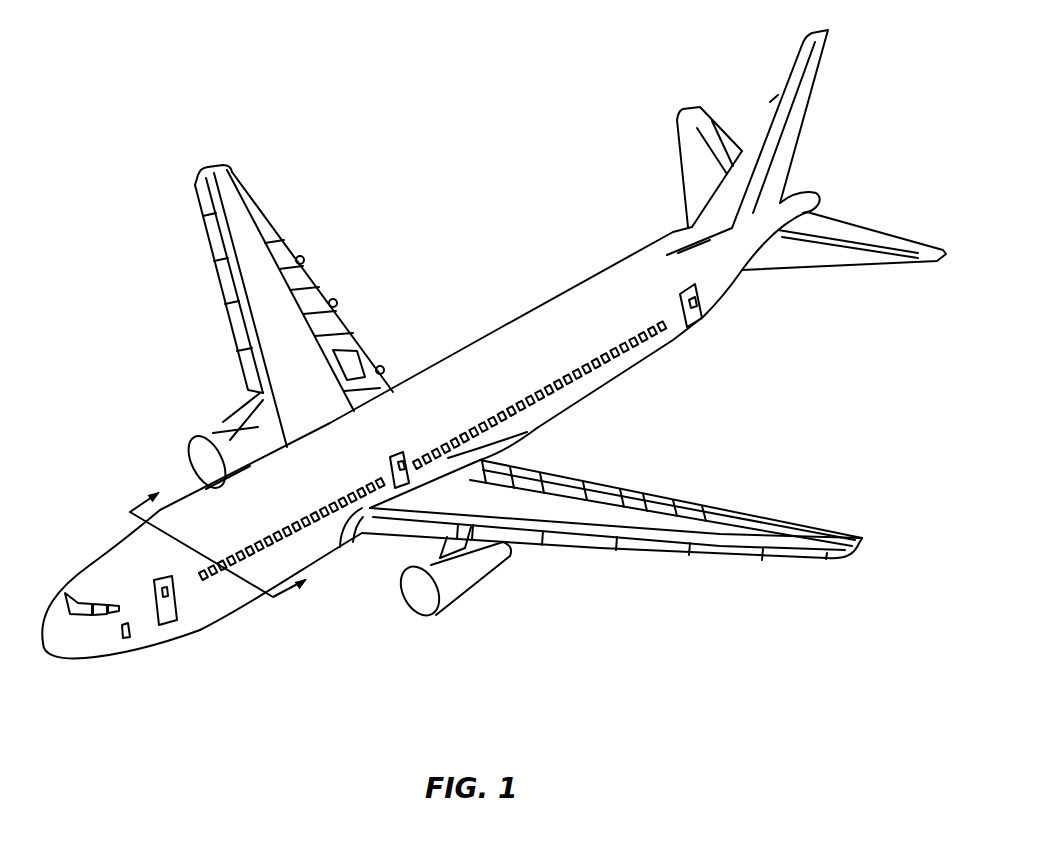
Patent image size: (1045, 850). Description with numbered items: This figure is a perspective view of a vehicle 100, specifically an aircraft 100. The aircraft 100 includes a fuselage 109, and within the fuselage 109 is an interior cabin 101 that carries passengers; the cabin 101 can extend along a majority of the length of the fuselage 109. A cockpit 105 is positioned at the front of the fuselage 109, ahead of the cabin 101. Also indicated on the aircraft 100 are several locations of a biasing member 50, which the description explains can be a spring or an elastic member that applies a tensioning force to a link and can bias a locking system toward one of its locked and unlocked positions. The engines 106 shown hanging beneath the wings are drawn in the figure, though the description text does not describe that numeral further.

The aircraft 100 is at (433, 240).
The interior cabin 101 is at (268, 480).
The cockpit 105 is at (95, 580).
The engine 106 is at (230, 438).
The fuselage 109 is at (578, 389).
The biasing member 50 is at (130, 634).